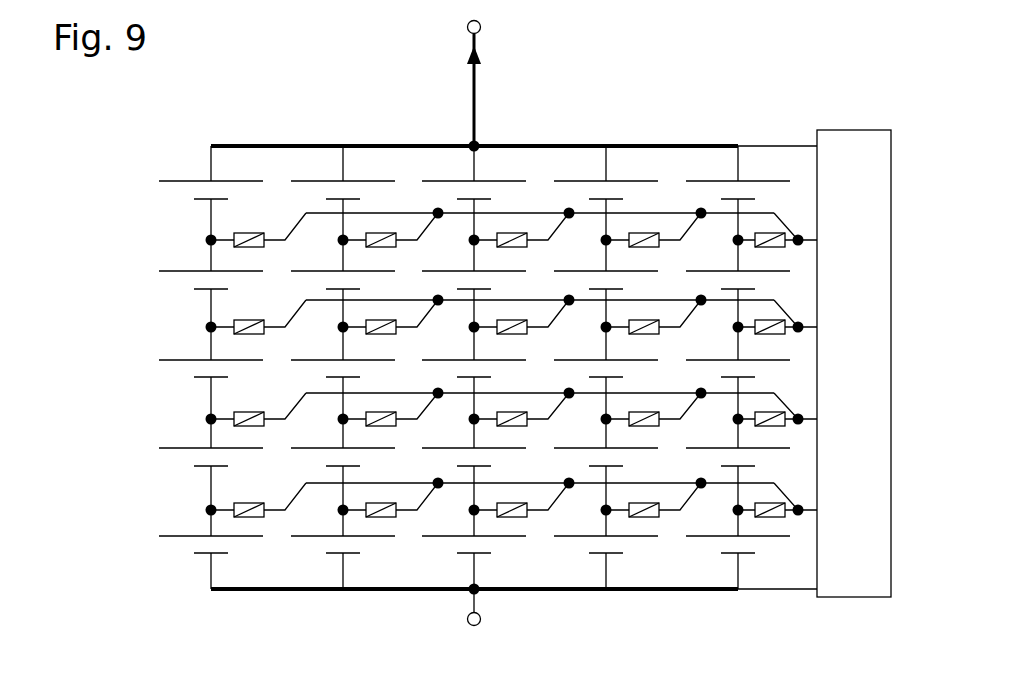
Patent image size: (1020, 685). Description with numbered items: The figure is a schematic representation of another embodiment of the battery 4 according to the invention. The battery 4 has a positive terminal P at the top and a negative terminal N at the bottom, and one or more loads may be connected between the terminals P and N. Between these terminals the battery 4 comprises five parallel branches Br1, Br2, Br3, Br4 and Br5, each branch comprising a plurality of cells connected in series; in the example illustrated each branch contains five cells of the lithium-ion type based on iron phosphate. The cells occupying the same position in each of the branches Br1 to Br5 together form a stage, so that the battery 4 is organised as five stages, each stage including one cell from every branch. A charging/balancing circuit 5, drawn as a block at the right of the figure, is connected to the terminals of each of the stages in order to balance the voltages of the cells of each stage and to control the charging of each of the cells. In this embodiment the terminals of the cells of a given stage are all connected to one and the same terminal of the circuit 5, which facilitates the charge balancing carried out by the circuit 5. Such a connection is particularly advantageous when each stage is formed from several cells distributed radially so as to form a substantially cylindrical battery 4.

The battery 4 is at (541, 98).
The charging/balancing circuit 5 is at (854, 130).
The branch Br1 is at (159, 132).
The branch Br2 is at (291, 132).
The branch Br3 is at (422, 132).
The branch Br4 is at (554, 132).
The branch Br5 is at (686, 132).
The positive terminal P is at (480, 84).
The negative terminal N is at (493, 607).